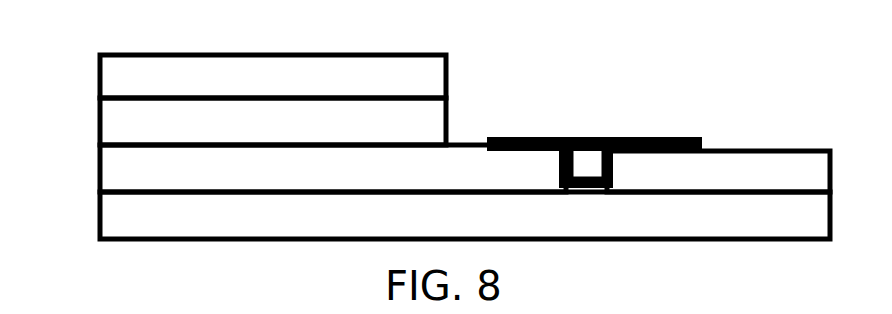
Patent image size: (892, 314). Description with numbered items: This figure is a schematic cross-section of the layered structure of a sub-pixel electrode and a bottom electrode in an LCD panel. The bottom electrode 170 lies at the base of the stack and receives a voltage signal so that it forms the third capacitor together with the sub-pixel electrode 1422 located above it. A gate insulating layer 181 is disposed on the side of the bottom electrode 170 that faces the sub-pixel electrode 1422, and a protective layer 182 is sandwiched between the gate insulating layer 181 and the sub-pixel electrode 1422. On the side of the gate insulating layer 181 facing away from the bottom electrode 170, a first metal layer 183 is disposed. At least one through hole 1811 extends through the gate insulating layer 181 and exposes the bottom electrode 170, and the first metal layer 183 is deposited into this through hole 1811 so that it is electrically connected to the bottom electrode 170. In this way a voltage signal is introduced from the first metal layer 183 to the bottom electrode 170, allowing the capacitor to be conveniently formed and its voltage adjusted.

The bottom electrode 170 is at (113, 226).
The gate insulating layer 181 is at (107, 174).
The protective layer 182 is at (118, 130).
The sub-pixel electrode 1422 is at (108, 75).
The first metal layer 183 is at (665, 138).
The through hole 1811 is at (585, 163).